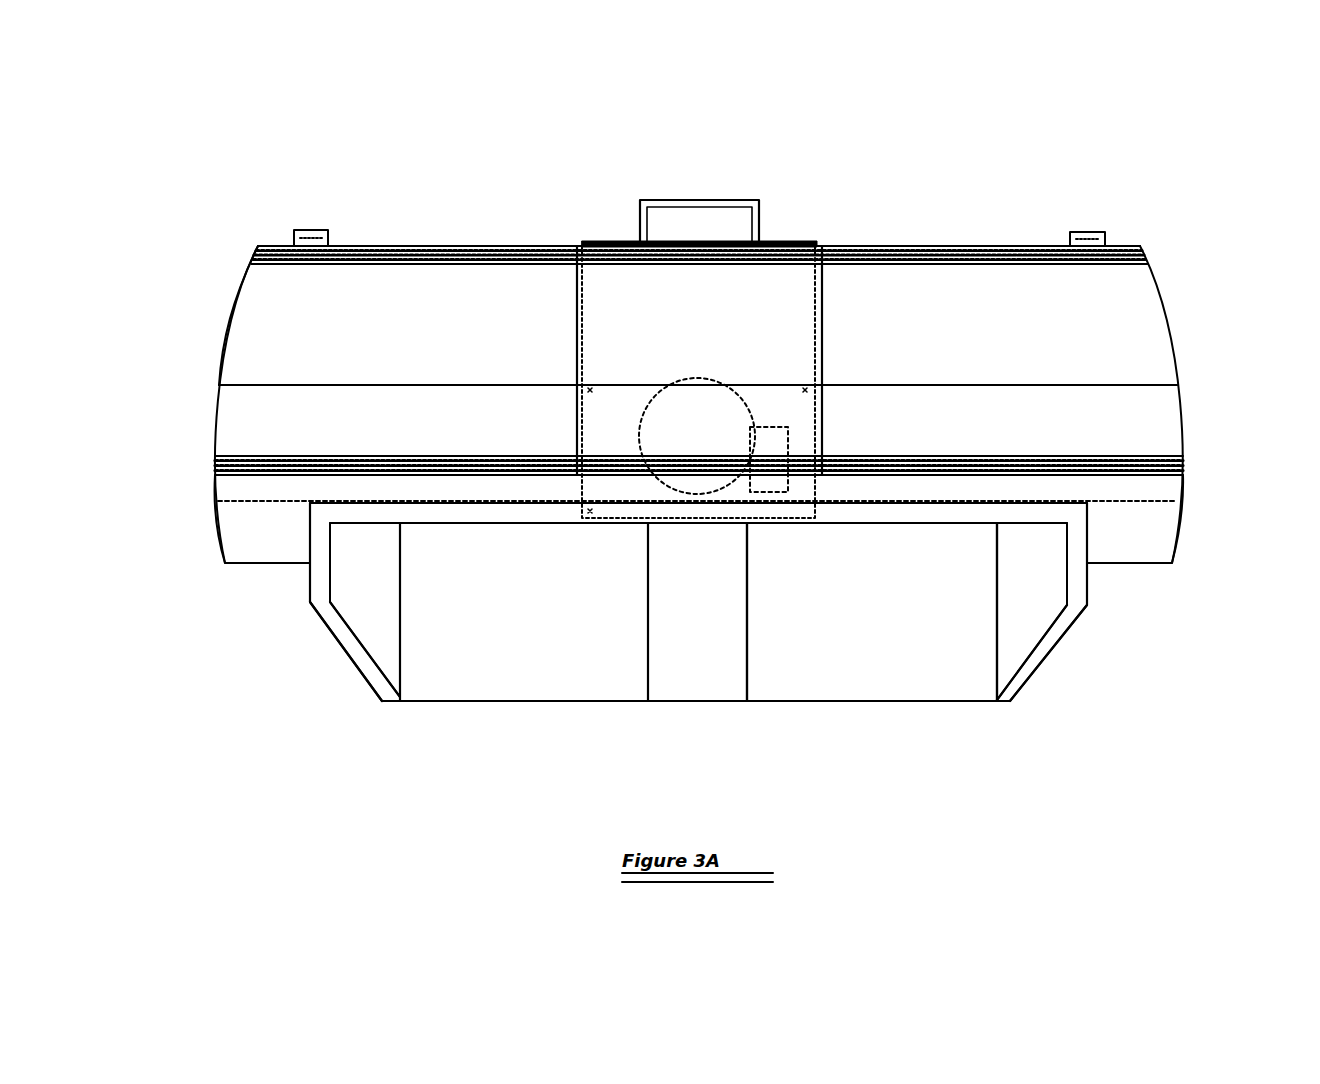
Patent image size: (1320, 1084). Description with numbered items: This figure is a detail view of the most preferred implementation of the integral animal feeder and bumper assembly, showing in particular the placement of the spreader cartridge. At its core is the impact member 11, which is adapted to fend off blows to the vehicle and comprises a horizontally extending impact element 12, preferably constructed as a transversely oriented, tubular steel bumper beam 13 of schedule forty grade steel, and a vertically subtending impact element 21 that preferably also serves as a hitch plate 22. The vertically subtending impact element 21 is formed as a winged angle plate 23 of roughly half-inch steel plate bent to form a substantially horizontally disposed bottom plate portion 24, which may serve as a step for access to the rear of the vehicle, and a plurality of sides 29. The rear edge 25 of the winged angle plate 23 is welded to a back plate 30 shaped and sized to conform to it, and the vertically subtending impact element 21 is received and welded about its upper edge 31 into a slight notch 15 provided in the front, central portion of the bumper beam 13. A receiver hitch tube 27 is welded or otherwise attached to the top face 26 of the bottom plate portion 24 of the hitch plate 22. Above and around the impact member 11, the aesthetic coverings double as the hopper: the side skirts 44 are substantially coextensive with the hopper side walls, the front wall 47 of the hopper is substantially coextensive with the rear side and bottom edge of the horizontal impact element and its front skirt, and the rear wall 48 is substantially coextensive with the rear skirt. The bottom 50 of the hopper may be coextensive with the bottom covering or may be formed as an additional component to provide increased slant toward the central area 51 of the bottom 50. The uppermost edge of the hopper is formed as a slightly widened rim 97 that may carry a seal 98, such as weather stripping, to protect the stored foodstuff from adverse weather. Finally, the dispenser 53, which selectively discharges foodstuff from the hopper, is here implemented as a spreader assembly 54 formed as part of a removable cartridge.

The impact member 11 is at (1157, 432).
The horizontally extending impact element 12 is at (252, 427).
The tubular steel bumper beam 13 is at (250, 552).
The notch 15 is at (1090, 545).
The vertically subtending impact element 21 is at (1037, 668).
The hitch plate 22 is at (360, 627).
The winged angle plate 23 is at (822, 685).
The bottom plate portion 24 is at (547, 679).
The rear edge 25 is at (930, 535).
The top face 26 is at (698, 602).
The receiver hitch tube 27 is at (720, 643).
The sides 29 is at (374, 580).
The back plate 30 is at (466, 515).
The upper edge 31 is at (860, 515).
The side skirts 44 is at (398, 324).
The front wall 47 is at (1145, 505).
The rear wall 48 is at (841, 267).
The bottom 50 is at (999, 324).
The central area 51 is at (538, 343).
The dispenser 53 is at (640, 298).
The spreader assembly 54 is at (758, 287).
The rim 97 is at (1098, 268).
The seal 98 is at (988, 258).